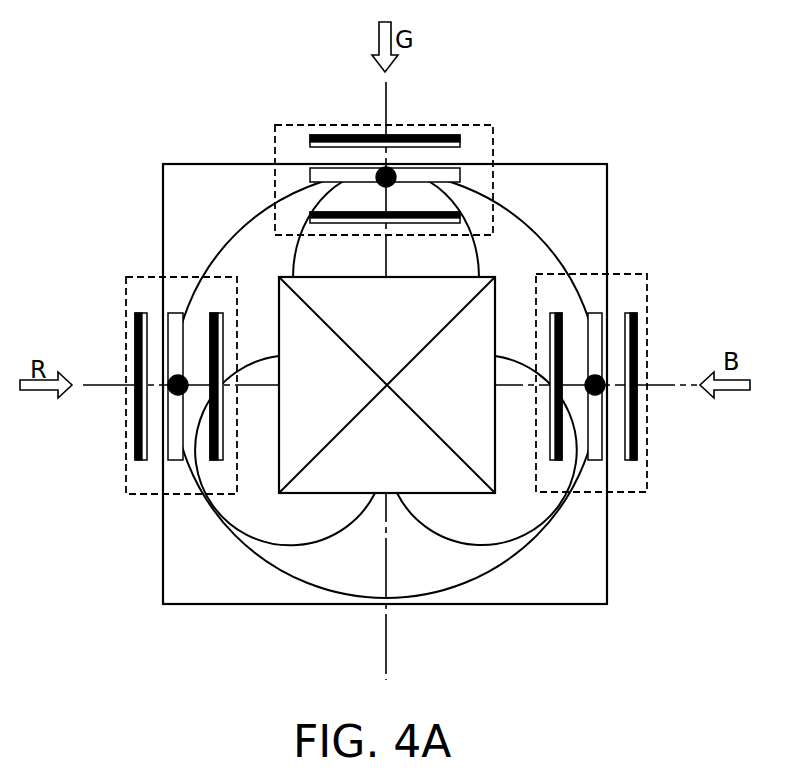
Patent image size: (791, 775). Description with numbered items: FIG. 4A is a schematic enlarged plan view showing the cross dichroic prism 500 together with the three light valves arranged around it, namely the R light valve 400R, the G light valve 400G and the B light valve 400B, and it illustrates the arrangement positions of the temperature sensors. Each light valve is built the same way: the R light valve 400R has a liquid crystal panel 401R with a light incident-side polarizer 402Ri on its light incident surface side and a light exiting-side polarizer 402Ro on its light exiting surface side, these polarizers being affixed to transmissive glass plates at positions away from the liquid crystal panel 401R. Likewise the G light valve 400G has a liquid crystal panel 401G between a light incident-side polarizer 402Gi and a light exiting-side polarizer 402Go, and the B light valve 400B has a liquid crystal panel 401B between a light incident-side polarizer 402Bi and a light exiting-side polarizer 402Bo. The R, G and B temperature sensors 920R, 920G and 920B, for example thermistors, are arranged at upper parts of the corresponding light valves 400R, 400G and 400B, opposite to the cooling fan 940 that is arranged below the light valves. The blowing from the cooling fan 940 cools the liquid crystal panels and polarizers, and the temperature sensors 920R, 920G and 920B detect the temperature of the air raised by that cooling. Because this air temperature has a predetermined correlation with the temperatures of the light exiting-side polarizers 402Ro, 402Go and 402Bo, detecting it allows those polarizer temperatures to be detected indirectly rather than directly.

The G light valve 400G is at (338, 124).
The liquid crystal panel 401G is at (458, 173).
The light incident-side polarizer 402Gi is at (458, 136).
The light exiting-side polarizer 402Go is at (458, 216).
The G temperature sensor 920G is at (378, 177).
The R light valve 400R is at (126, 338).
The liquid crystal panel 401R is at (168, 460).
The light incident-side polarizer 402Ri is at (142, 460).
The light exiting-side polarizer 402Ro is at (217, 460).
The R temperature sensor 920R is at (178, 376).
The B light valve 400B is at (647, 428).
The liquid crystal panel 401B is at (595, 312).
The light incident-side polarizer 402Bi is at (631, 312).
The light exiting-side polarizer 402Bo is at (556, 312).
The B temperature sensor 920B is at (595, 395).
The cross dichroic prism 500 is at (462, 494).
The cooling fan 940 is at (608, 577).